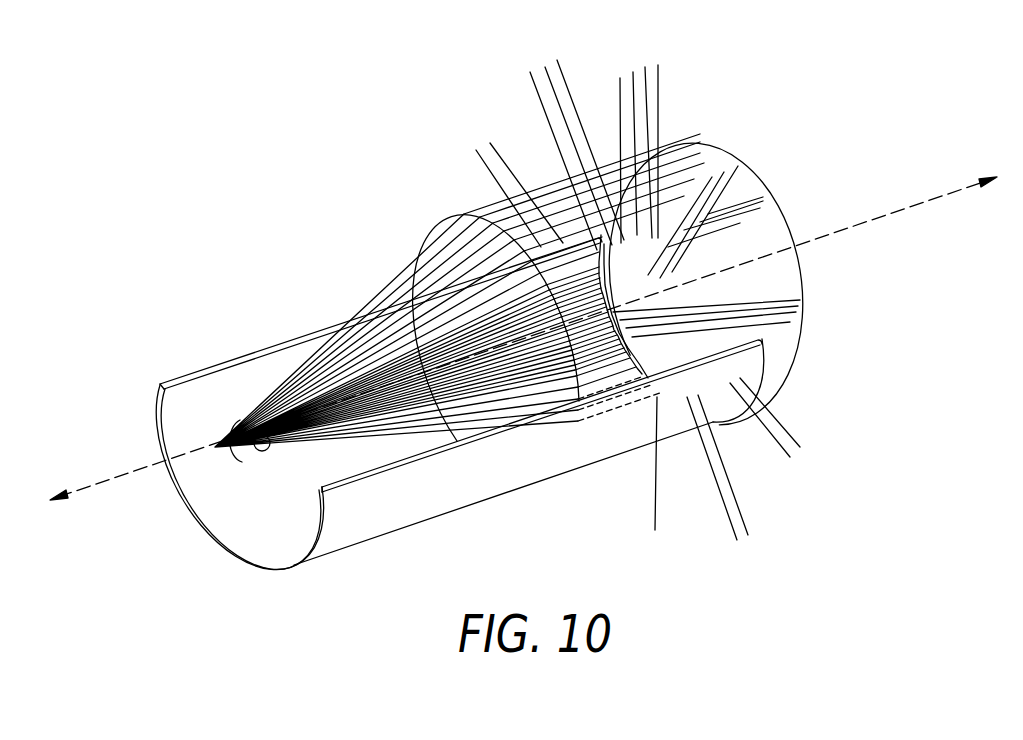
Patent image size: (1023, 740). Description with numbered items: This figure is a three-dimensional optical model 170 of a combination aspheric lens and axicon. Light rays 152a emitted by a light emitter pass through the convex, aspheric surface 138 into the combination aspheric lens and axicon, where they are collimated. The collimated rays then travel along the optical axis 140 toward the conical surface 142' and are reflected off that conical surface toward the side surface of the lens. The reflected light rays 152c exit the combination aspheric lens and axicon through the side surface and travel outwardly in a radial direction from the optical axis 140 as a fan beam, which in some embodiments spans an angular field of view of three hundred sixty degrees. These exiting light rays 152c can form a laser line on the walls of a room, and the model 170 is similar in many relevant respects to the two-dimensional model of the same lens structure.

The optical axis 140 is at (128, 473).
The three-dimensional optical model 170 is at (900, 90).
The convex surface 138 is at (468, 234).
The light rays 152a is at (385, 288).
The conical surface 142' is at (693, 341).
The reflected light rays 152c is at (658, 78).